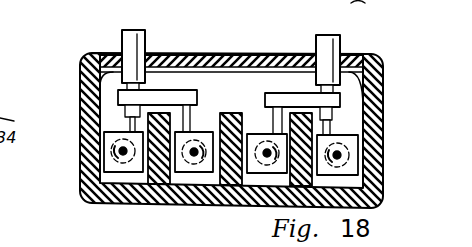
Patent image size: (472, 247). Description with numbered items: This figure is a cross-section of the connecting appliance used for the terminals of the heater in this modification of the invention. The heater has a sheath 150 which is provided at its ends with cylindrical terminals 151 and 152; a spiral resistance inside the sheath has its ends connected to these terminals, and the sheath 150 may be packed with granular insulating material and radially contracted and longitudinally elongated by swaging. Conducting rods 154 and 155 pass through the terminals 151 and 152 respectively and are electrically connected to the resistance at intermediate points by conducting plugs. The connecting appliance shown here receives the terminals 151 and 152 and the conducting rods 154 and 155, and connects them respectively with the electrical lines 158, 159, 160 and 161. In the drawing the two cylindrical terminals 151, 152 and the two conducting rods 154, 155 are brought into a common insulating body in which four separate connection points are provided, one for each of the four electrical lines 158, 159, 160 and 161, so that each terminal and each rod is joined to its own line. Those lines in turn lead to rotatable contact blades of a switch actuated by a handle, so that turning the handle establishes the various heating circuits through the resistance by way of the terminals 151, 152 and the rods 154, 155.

The sheath 150 is at (147, 43).
The cylindrical terminal 151 is at (140, 85).
The cylindrical terminal 152 is at (320, 87).
The conducting rod 154 is at (128, 123).
The conducting rod 155 is at (334, 127).
The electrical line 158 is at (195, 160).
The electrical line 159 is at (268, 162).
The electrical line 160 is at (122, 152).
The electrical line 161 is at (340, 154).